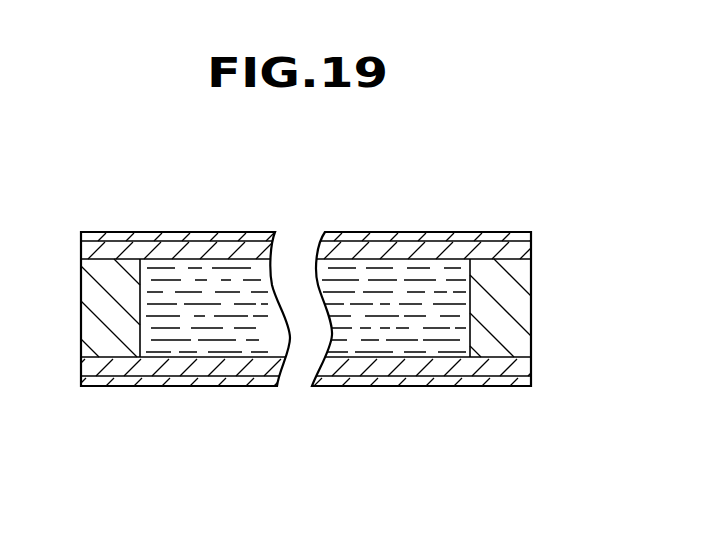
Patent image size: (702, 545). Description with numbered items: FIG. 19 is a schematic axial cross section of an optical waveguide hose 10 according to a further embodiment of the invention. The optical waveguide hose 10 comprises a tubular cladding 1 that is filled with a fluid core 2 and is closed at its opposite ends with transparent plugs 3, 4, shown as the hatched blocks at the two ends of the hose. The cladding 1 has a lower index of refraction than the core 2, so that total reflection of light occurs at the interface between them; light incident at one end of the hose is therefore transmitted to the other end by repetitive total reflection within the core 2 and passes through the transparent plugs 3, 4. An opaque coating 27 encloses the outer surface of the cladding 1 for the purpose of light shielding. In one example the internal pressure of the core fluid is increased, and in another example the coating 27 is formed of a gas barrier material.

The cladding 1 is at (432, 257).
The fluid core 2 is at (438, 345).
The transparent plug 3 is at (97, 312).
The transparent plug 4 is at (518, 302).
The optical waveguide hose 10 is at (233, 232).
The opaque coating 27 is at (160, 232).